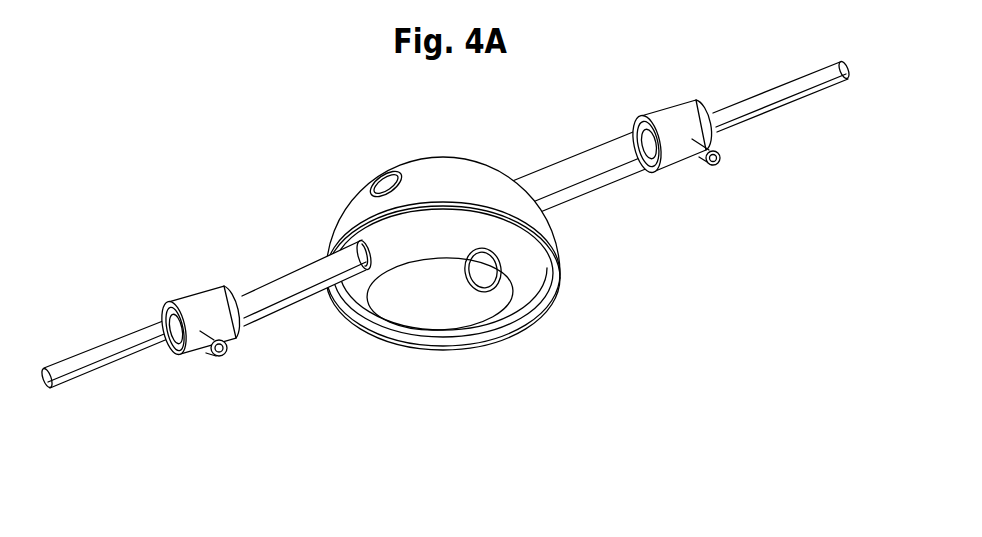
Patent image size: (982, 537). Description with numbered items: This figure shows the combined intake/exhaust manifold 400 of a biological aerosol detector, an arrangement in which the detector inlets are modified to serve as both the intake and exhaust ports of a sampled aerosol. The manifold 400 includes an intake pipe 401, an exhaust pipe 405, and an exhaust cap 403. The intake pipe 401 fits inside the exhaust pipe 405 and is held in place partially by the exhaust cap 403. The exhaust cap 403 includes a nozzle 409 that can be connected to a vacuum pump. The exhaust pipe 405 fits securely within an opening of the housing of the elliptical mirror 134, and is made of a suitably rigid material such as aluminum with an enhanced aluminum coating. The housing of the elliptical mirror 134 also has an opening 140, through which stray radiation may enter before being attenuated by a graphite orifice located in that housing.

The combined intake/exhaust manifold 400 is at (237, 162).
The elliptical mirror 134 is at (443, 142).
The opening 140 is at (377, 173).
The intake pipe 401 is at (123, 362).
The exhaust cap 403 is at (195, 293).
The exhaust pipe 405 is at (278, 306).
The nozzle 409 is at (203, 358).